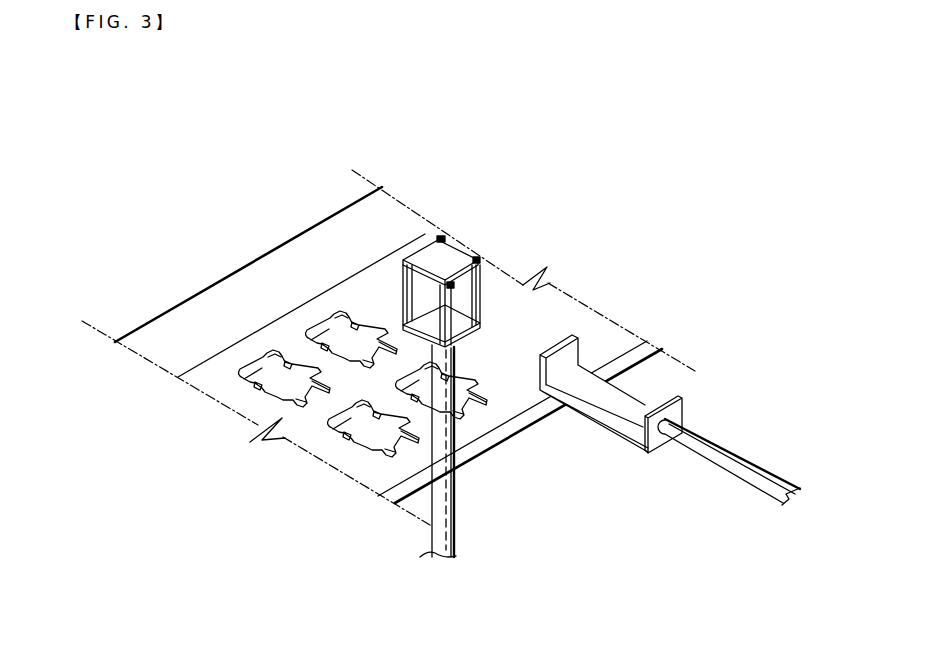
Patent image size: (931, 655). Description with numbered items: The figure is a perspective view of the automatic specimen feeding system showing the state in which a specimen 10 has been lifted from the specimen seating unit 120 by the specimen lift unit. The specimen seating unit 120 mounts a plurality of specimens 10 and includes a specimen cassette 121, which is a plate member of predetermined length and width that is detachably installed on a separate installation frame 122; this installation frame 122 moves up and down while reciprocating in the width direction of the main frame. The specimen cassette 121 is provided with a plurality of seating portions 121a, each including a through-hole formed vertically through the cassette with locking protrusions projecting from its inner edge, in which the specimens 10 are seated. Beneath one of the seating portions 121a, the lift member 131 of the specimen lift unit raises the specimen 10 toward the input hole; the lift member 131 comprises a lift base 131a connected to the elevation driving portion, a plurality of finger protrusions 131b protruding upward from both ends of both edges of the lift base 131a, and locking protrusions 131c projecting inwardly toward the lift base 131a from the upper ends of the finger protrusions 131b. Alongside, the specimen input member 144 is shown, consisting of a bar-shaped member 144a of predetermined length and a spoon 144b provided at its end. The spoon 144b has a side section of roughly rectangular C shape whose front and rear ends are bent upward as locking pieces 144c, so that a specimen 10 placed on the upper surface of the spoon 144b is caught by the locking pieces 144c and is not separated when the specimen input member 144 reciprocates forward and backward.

The specimen 10 is at (452, 258).
The specimen seating unit 120 is at (388, 307).
The specimen cassette 121 is at (388, 323).
The seating portion 121a is at (352, 362).
The installation frame 122 is at (293, 260).
The lift member 131 is at (354, 436).
The lift base 131a is at (410, 338).
The finger protrusion 131b is at (352, 362).
The locking protrusion 131c is at (445, 288).
The specimen input member 144 is at (665, 467).
The bar-shaped member 144a is at (752, 480).
The spoon 144b is at (608, 428).
The locking piece 144c is at (677, 395).